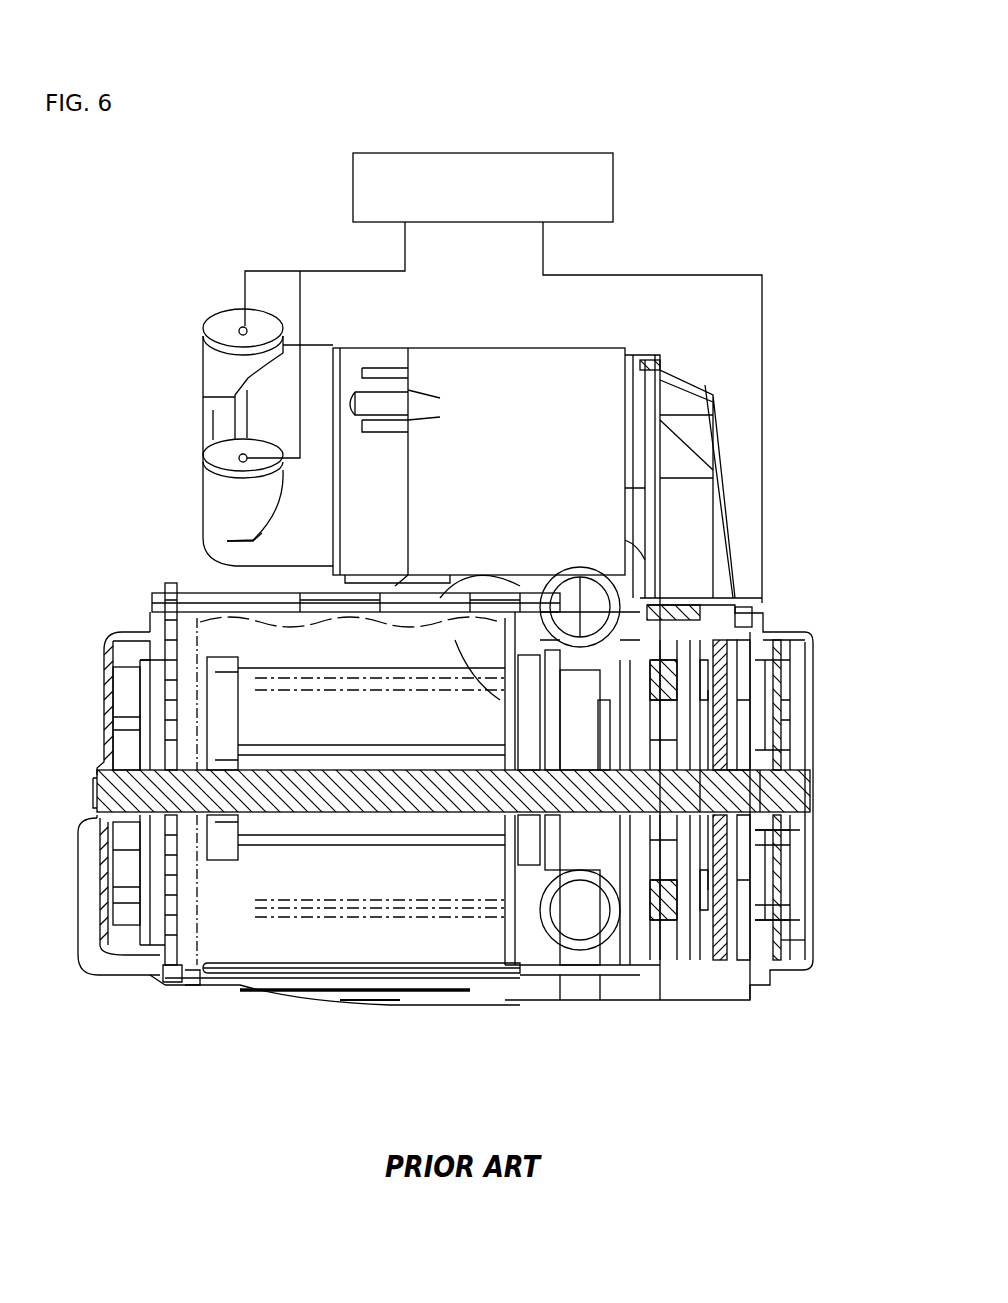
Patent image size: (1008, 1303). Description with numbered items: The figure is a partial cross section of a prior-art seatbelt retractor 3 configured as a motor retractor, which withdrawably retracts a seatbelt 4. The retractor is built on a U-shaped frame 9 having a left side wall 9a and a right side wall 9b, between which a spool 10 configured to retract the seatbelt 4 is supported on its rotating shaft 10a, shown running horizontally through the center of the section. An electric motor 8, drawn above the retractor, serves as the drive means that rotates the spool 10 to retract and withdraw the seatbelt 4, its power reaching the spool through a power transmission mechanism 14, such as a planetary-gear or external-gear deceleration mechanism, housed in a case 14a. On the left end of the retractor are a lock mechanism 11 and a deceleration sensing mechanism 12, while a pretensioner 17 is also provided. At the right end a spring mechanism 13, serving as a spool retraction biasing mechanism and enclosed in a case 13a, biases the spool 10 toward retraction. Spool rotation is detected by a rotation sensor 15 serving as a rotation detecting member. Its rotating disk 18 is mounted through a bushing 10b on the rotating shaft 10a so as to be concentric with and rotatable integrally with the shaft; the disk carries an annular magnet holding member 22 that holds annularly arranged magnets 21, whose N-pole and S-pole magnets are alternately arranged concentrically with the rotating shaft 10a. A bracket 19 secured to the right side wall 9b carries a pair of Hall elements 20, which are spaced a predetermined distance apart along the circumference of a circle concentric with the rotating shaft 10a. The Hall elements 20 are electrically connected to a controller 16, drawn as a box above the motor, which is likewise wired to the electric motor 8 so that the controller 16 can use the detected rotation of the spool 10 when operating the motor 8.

The seatbelt retractor 3 is at (246, 1015).
The seatbelt 4 is at (478, 625).
The electric motor 8 is at (509, 470).
The frame 9 is at (450, 980).
The left side wall 9a is at (168, 583).
The right side wall 9b is at (548, 998).
The spool 10 is at (310, 975).
The rotating shaft 10a is at (790, 822).
The bushing 10b is at (795, 795).
The lock mechanism 11 is at (119, 627).
The deceleration sensing mechanism 12 is at (93, 978).
The spring mechanism 13 is at (791, 957).
The case 13a is at (782, 717).
The power transmission mechanism 14 is at (670, 897).
The case 14a is at (722, 732).
The rotation sensor 15 is at (760, 937).
The controller 16 is at (613, 185).
The pretensioner 17 is at (578, 922).
The rotating disk 18 is at (782, 845).
The bracket 19 is at (782, 902).
The Hall elements 20 is at (735, 943).
The magnets 21 is at (792, 951).
The magnet holding member 22 is at (785, 697).